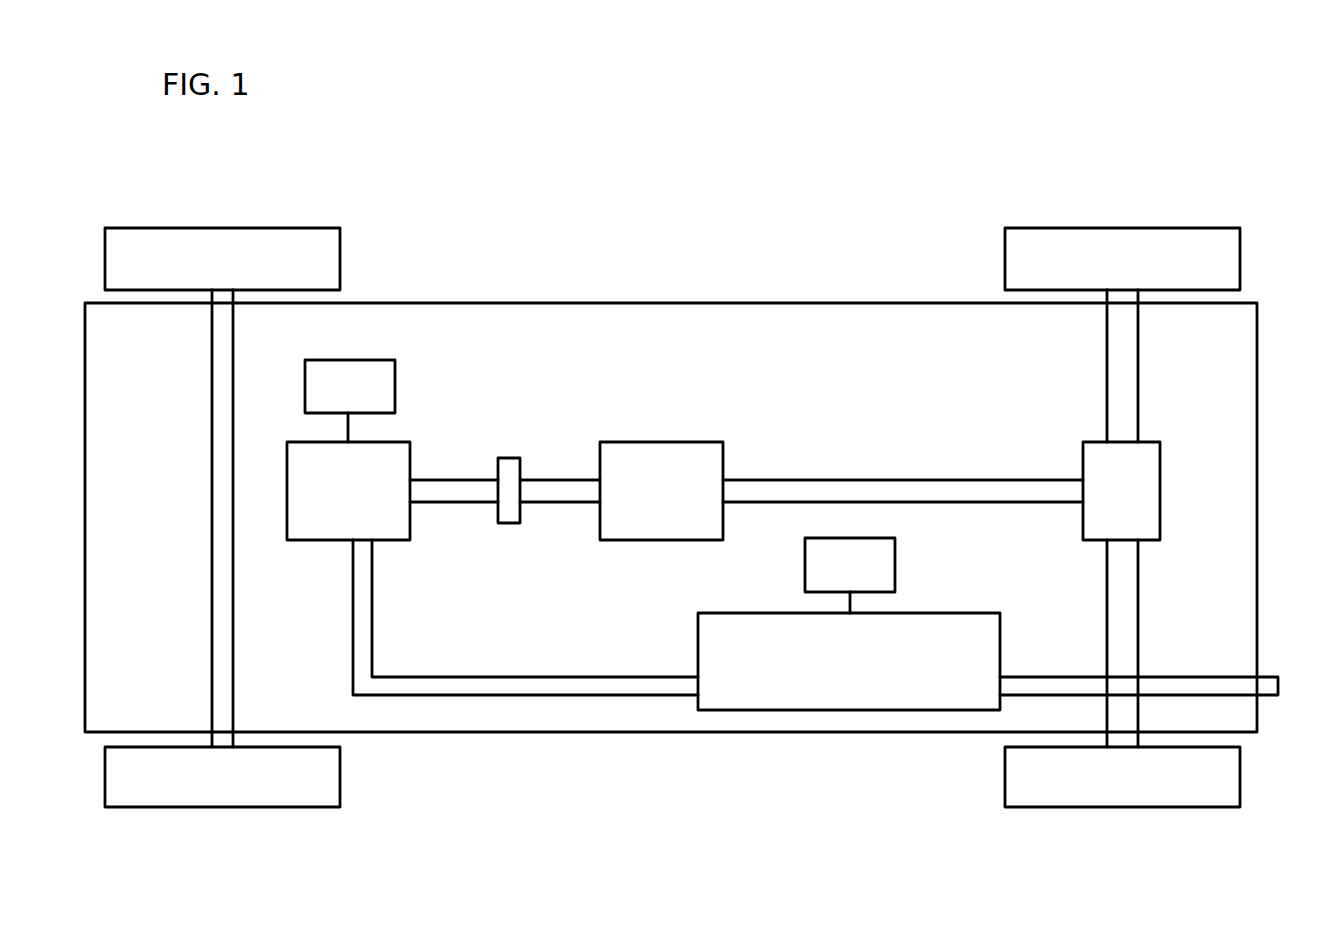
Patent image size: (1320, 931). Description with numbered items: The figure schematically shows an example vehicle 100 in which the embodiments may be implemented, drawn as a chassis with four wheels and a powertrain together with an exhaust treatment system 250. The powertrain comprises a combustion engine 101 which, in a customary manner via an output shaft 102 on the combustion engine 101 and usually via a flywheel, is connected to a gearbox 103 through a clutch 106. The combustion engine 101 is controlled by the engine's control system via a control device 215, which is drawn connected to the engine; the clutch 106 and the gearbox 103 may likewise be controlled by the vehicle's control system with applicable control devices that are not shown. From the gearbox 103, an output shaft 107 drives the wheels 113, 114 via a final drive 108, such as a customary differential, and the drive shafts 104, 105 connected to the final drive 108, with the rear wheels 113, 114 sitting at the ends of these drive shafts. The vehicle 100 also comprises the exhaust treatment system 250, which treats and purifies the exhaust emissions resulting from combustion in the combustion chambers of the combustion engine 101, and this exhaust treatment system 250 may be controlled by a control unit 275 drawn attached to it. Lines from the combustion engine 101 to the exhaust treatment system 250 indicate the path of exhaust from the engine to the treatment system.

The vehicle 100 is at (568, 133).
The combustion engine 101 is at (318, 527).
The output shaft 102 is at (432, 487).
The gearbox 103 is at (663, 455).
The drive shaft 104 is at (1125, 362).
The drive shaft 105 is at (1132, 650).
The clutch 106 is at (504, 512).
The output shaft 107 is at (1002, 495).
The final drive 108 is at (1153, 485).
The wheel 113 is at (1232, 248).
The wheel 114 is at (1233, 778).
The control device 215 is at (348, 397).
The exhaust treatment system 250 is at (867, 702).
The control unit 275 is at (850, 573).